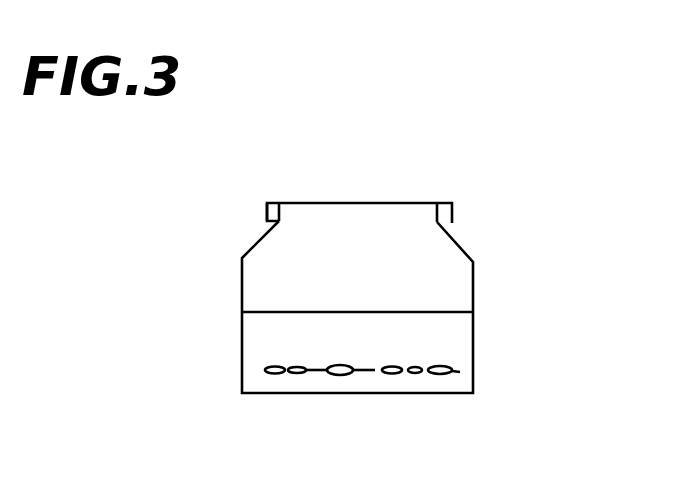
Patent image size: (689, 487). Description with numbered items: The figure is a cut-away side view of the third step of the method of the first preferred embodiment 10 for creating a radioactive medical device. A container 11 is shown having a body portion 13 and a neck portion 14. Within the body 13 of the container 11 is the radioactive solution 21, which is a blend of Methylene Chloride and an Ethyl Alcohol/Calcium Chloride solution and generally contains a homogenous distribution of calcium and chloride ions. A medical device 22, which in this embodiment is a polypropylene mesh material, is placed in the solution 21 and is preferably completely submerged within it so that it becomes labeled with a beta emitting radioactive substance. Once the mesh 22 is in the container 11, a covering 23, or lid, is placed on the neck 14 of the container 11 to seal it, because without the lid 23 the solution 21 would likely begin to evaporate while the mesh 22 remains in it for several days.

The first preferred embodiment 10 is at (294, 178).
The container 11 is at (476, 314).
The body portion 13 is at (242, 342).
The neck portion 14 is at (268, 213).
The new solution 21 is at (450, 347).
The medical device 22 is at (458, 372).
The covering 23 is at (405, 203).